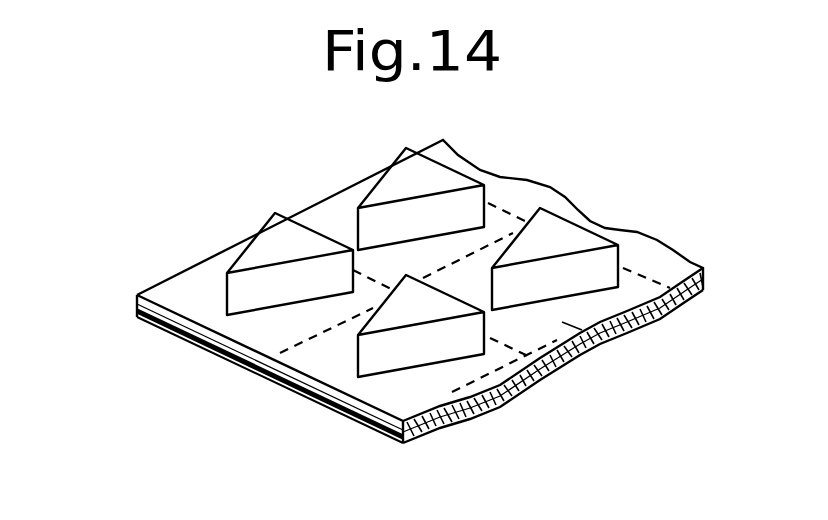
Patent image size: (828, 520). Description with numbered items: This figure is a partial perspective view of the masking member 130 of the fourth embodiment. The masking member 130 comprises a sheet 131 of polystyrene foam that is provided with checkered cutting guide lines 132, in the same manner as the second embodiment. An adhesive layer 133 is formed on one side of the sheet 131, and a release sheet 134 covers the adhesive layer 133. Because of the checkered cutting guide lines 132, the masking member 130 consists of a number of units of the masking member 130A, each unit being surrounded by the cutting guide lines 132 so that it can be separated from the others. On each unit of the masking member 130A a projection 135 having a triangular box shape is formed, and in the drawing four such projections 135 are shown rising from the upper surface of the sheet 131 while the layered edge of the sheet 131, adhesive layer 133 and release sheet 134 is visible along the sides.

The masking member 130 is at (140, 285).
The unit of the masking member 130A is at (333, 208).
The sheet 131 is at (467, 412).
The cutting guide lines 132 is at (302, 342).
The adhesive layer 133 is at (172, 330).
The release sheet 134 is at (423, 437).
The projection 135 is at (270, 240).